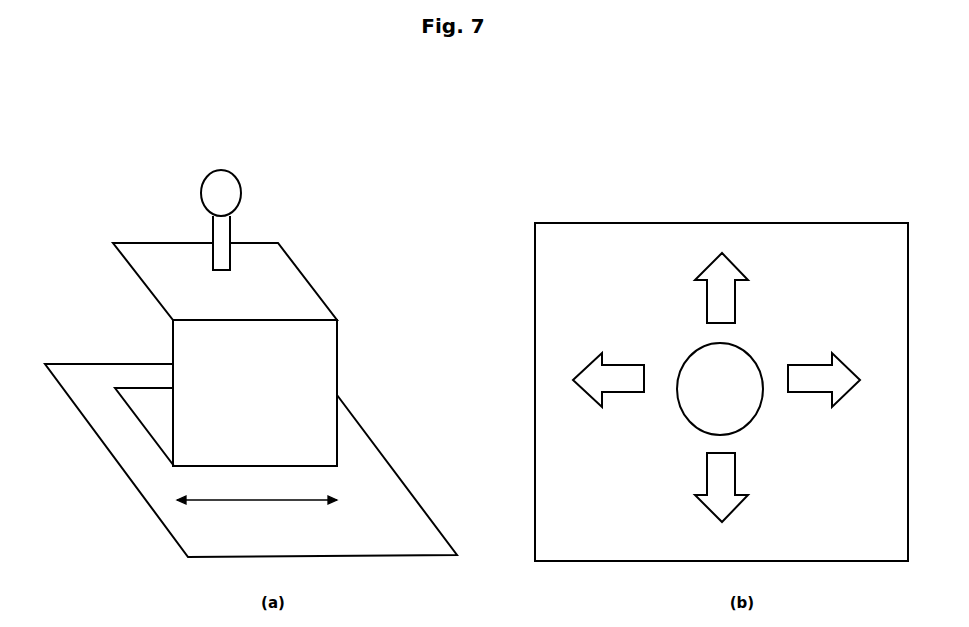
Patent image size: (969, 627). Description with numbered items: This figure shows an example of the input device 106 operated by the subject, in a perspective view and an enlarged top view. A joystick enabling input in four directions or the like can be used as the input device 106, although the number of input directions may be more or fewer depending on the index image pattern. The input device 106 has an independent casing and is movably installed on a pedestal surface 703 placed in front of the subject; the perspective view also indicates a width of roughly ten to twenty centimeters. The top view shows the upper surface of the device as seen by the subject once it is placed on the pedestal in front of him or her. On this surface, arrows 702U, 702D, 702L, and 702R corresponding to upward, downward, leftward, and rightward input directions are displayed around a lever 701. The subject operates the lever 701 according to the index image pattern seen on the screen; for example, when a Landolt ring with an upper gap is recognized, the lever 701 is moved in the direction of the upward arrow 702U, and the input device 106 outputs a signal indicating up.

The lever 701 is at (223, 185).
The pedestal surface 703 is at (120, 368).
The input device 106 is at (318, 262).
The upward arrow 702U is at (697, 282).
The downward arrow 702D is at (710, 503).
The leftward arrow 702L is at (625, 385).
The rightward arrow 702R is at (808, 385).